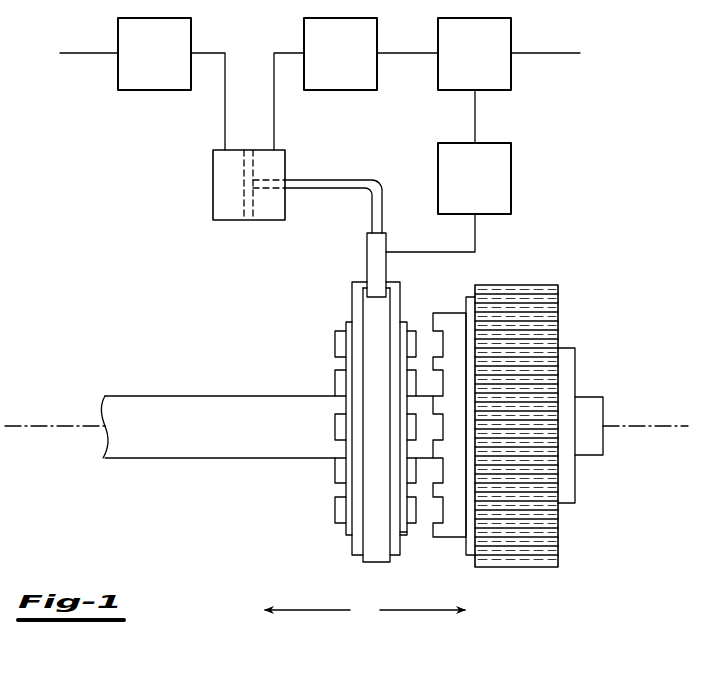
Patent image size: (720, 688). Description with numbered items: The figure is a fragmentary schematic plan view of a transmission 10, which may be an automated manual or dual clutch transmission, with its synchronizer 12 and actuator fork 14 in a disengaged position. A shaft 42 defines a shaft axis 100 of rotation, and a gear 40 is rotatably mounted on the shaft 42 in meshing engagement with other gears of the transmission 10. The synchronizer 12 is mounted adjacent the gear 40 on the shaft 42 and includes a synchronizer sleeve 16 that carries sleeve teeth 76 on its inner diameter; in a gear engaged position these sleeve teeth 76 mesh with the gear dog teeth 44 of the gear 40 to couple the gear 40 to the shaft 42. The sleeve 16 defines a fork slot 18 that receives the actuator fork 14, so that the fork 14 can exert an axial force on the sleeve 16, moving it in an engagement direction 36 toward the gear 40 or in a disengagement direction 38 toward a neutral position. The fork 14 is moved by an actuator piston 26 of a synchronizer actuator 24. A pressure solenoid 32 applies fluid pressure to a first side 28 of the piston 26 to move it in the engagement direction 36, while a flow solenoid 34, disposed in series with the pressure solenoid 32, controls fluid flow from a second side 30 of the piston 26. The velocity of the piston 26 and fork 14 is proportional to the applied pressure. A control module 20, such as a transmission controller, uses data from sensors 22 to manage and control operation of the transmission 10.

The transmission 10 is at (560, 226).
The synchronizer 12 is at (318, 305).
The actuator fork 14 is at (367, 244).
The synchronizer sleeve 16 is at (350, 548).
The fork slot 18 is at (370, 318).
The control module 20 is at (483, 61).
The sensors 22 is at (483, 188).
The synchronizer actuator 24 is at (346, 171).
The actuator piston 26 is at (243, 198).
The first side of the actuator piston 28 is at (231, 166).
The second side of the actuator piston 30 is at (285, 162).
The pressure solenoid 32 is at (161, 61).
The flow solenoid 34 is at (350, 61).
The engagement direction 36 is at (420, 610).
The disengagement direction 38 is at (320, 610).
The gear 40 is at (591, 305).
The shaft 42 is at (210, 395).
The gear dog teeth 44 is at (425, 318).
The sleeve teeth 76 is at (410, 535).
The shaft axis 100 is at (665, 426).